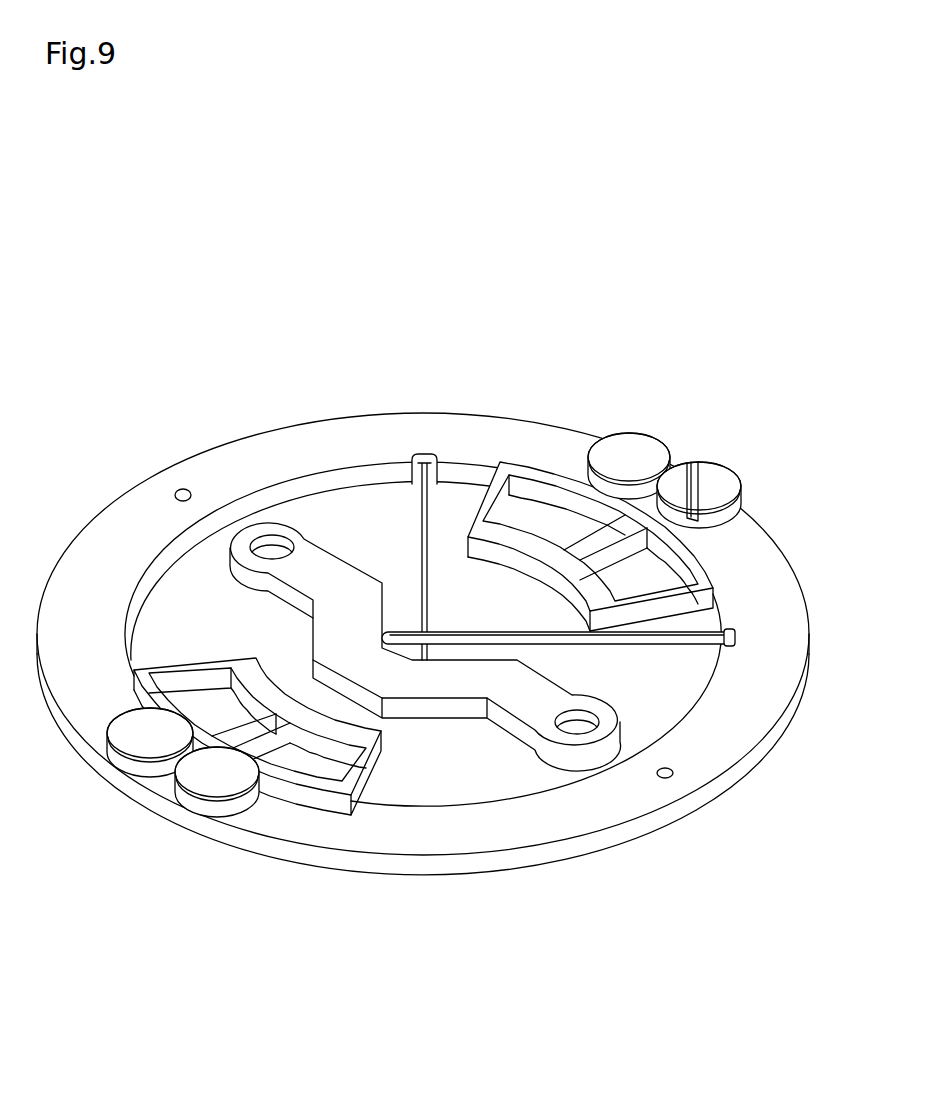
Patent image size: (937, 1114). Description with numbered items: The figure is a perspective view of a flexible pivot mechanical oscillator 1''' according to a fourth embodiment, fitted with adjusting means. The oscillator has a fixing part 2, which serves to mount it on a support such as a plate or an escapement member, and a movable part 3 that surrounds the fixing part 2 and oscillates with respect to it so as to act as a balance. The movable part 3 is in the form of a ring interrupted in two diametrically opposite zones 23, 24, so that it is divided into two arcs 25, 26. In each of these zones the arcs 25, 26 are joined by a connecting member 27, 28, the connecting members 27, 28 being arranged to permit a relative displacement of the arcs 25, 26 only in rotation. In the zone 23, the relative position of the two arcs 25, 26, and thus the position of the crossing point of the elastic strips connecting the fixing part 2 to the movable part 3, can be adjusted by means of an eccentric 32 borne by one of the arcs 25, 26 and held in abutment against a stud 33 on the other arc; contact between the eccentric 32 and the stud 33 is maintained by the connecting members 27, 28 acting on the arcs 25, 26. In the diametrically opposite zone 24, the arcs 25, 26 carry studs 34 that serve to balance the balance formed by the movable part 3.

The flexible pivot mechanical oscillator 1''' is at (417, 625).
The fixing part 2 is at (452, 714).
The movable part 3 is at (450, 878).
The zone 23 is at (693, 454).
The zone 24 is at (203, 749).
The arc 25 is at (585, 850).
The arc 26 is at (340, 435).
The connecting member 27 is at (528, 591).
The connecting member 28 is at (230, 650).
The eccentric 32 is at (727, 487).
The stud 33 is at (636, 446).
The stud 34 is at (142, 738).